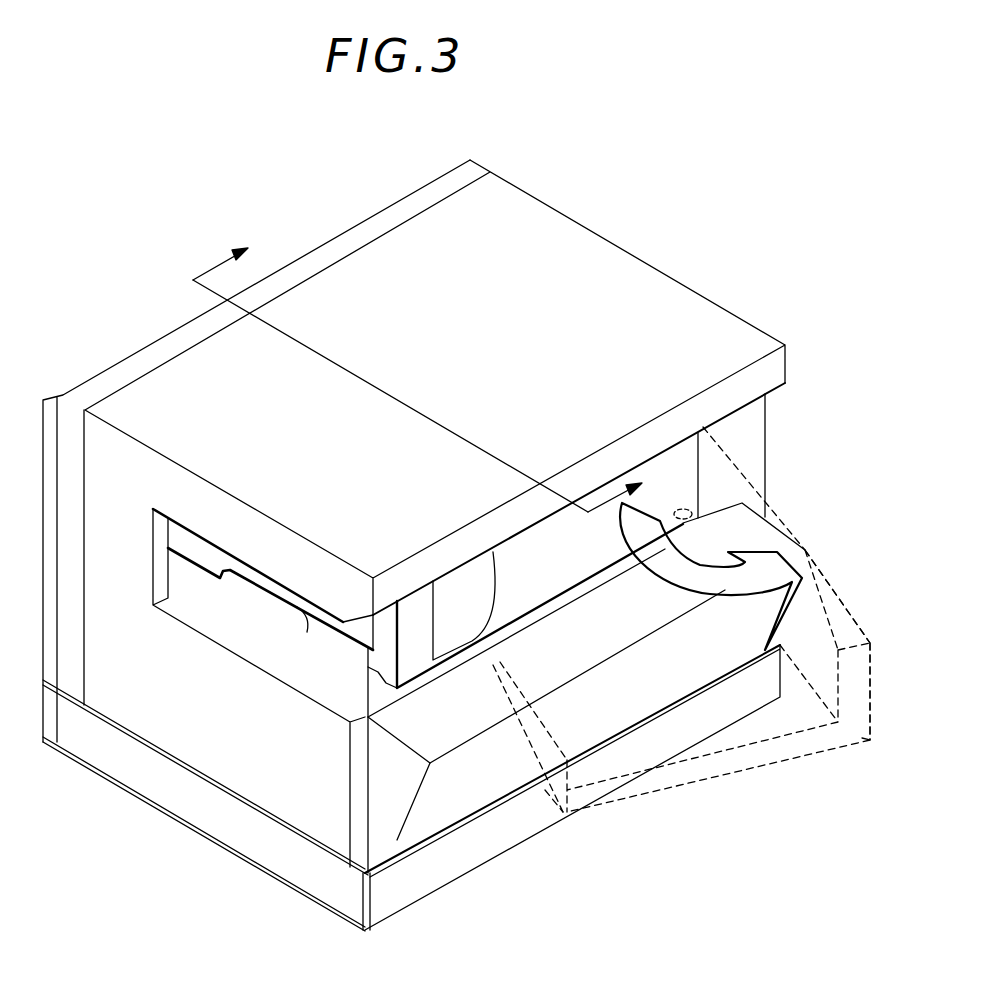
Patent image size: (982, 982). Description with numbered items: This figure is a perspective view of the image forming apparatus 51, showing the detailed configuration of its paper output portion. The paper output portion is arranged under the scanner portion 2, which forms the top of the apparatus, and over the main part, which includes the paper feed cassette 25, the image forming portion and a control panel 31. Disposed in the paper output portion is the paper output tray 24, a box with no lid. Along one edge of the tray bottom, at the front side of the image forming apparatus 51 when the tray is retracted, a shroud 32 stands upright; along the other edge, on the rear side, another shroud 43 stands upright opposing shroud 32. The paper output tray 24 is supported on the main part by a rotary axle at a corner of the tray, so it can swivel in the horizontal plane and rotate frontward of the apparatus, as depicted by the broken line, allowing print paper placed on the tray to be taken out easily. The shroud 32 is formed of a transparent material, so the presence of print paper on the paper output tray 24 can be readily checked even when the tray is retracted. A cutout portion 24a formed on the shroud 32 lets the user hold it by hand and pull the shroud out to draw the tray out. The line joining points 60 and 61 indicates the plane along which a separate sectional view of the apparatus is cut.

The image forming apparatus 51 is at (668, 272).
The scanner portion 2 is at (775, 368).
The paper output tray 24 is at (328, 640).
The cutout portion 24a is at (460, 580).
The paper feed cassette 25 is at (432, 880).
The control panel 31 is at (410, 806).
The shroud 32 is at (823, 597).
The shroud 43 is at (528, 746).
The cutting plane point 60 is at (370, 380).
The cutting plane point 61 is at (693, 566).